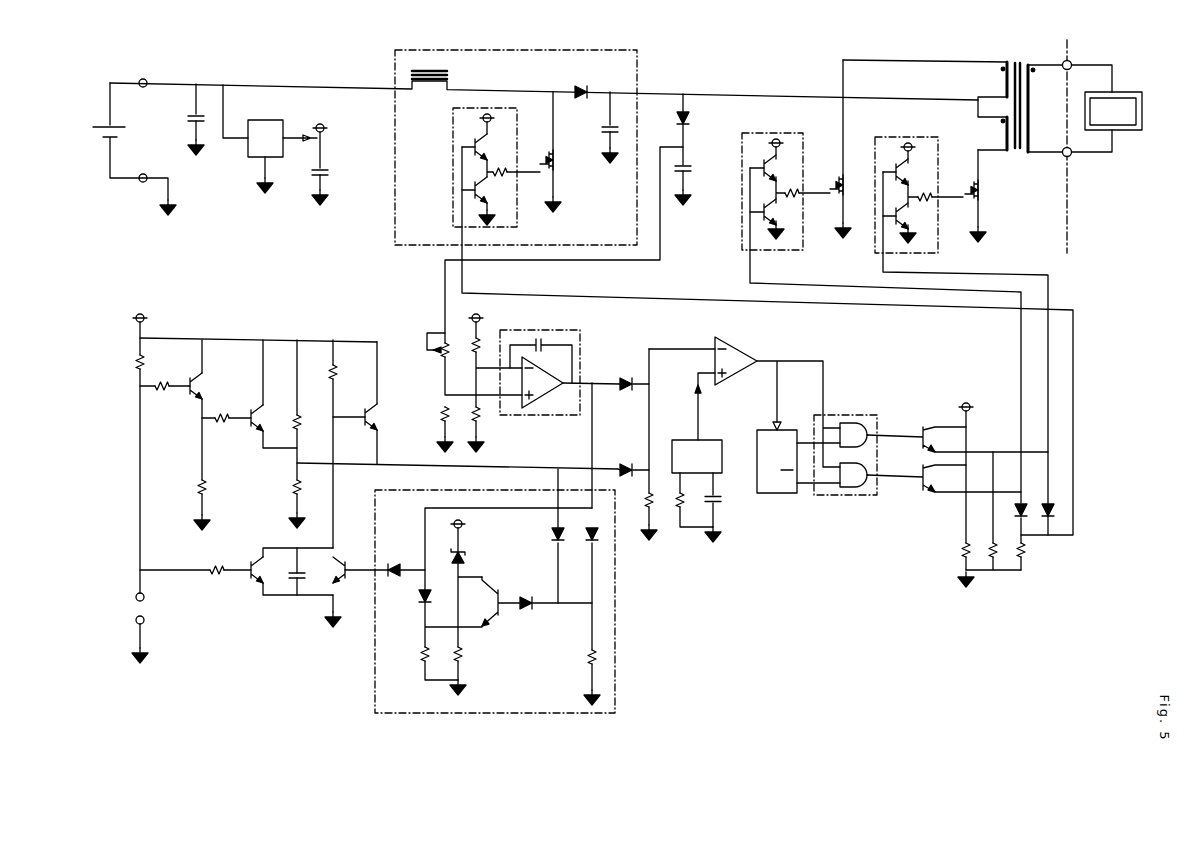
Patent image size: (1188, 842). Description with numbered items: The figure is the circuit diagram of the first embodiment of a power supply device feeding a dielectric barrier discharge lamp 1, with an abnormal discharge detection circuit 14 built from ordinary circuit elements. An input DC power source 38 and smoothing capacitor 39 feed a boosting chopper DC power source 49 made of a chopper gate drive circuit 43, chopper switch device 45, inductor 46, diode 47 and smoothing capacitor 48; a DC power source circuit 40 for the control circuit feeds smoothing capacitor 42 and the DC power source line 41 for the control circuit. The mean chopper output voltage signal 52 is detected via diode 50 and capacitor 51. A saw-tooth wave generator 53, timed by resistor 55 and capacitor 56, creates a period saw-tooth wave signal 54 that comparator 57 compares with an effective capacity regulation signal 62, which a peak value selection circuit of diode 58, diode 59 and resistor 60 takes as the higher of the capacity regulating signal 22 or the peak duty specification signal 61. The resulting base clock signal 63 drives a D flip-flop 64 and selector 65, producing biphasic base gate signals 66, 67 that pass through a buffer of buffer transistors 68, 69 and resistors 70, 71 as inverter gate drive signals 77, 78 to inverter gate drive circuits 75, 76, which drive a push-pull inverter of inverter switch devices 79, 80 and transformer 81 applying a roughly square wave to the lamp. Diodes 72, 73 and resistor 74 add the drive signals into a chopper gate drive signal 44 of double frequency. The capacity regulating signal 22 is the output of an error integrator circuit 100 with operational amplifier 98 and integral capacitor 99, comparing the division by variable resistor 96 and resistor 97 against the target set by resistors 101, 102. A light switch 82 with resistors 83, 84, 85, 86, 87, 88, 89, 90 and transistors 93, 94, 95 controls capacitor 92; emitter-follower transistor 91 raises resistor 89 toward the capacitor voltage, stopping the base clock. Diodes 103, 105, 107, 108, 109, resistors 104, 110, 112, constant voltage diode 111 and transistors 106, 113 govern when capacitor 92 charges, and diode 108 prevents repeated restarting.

The dielectric barrier discharge lamp 1 is at (1118, 135).
The abnormal discharge detection circuit 14 is at (617, 696).
The capacity regulating signal 22 is at (592, 380).
The input DC power source 38 is at (118, 138).
The smoothing capacitor 39 is at (185, 115).
The DC power source circuit for the control circuit 40 is at (265, 156).
The DC power source line for the control circuit 41 is at (330, 131).
The smoothing capacitor 42 is at (330, 176).
The chopper gate drive circuit 43 is at (520, 215).
The chopper gate drive signal 44 is at (1074, 398).
The chopper switch device 45 is at (538, 142).
The inductor 46 is at (430, 90).
The diode 47 is at (570, 90).
The smoothing capacitor 48 is at (608, 135).
The boosting chopper DC power source 49 is at (638, 74).
The diode 50 is at (690, 120).
The capacitor 51 is at (690, 172).
The chopper output voltage signal 52 is at (445, 280).
The saw-tooth wave generator 53 is at (697, 456).
The period saw-tooth wave signal 54 is at (696, 416).
The resistor 55 is at (683, 515).
The capacitor 56 is at (718, 505).
The comparator 57 is at (738, 380).
The diode 58 is at (627, 378).
The diode 59 is at (626, 462).
The resistor 60 is at (653, 515).
The peak duty specification signal 61 is at (394, 463).
The effective capacity regulation signal 62 is at (675, 348).
The base clock signal 63 is at (810, 360).
The D flip-flop 64 is at (776, 495).
The selector 65 is at (842, 498).
The base gate signal 66 is at (895, 430).
The base gate signal 67 is at (895, 486).
The buffer transistor 68 is at (932, 420).
The buffer transistor 69 is at (932, 497).
The resistor 70 is at (996, 565).
The resistor 71 is at (960, 550).
The diode 72 is at (1055, 515).
The diode 73 is at (1028, 555).
The resistor 74 is at (1025, 562).
The inverter gate drive circuit 75 is at (942, 240).
The inverter gate drive circuit 76 is at (812, 235).
The inverter gate drive signal 77 is at (1050, 284).
The inverter gate drive signal 78 is at (1020, 322).
The inverter switch device 79 is at (965, 172).
The inverter switch device 80 is at (836, 168).
The transformer 81 is at (1017, 158).
The light switch 82 is at (134, 604).
The resistor 83 is at (138, 365).
The resistor 84 is at (160, 392).
The resistor 85 is at (198, 487).
The resistor 86 is at (220, 428).
The resistor 87 is at (217, 578).
The resistor 88 is at (294, 414).
The resistor 89 is at (292, 487).
The resistor 90 is at (330, 380).
The transistor 91 is at (363, 406).
The capacitor 92 is at (292, 590).
The transistor 93 is at (188, 378).
The transistor 94 is at (248, 406).
The transistor 95 is at (248, 562).
The variable resistor 96 is at (440, 348).
The resistor 97 is at (440, 410).
The operational amplifier 98 is at (535, 406).
The integral capacitor 99 is at (541, 340).
The error integrator circuit 100 is at (582, 330).
The resistor 101 is at (482, 338).
The resistor 102 is at (482, 416).
The diode 103 is at (420, 606).
The resistor 104 is at (420, 665).
The diode 105 is at (395, 562).
The transistor 106 is at (347, 560).
The diode 107 is at (596, 546).
The diode 108 is at (550, 531).
The diode 109 is at (520, 612).
The resistor 110 is at (588, 658).
The constant voltage diode 111 is at (468, 558).
The resistor 112 is at (470, 662).
The transistor 113 is at (500, 590).